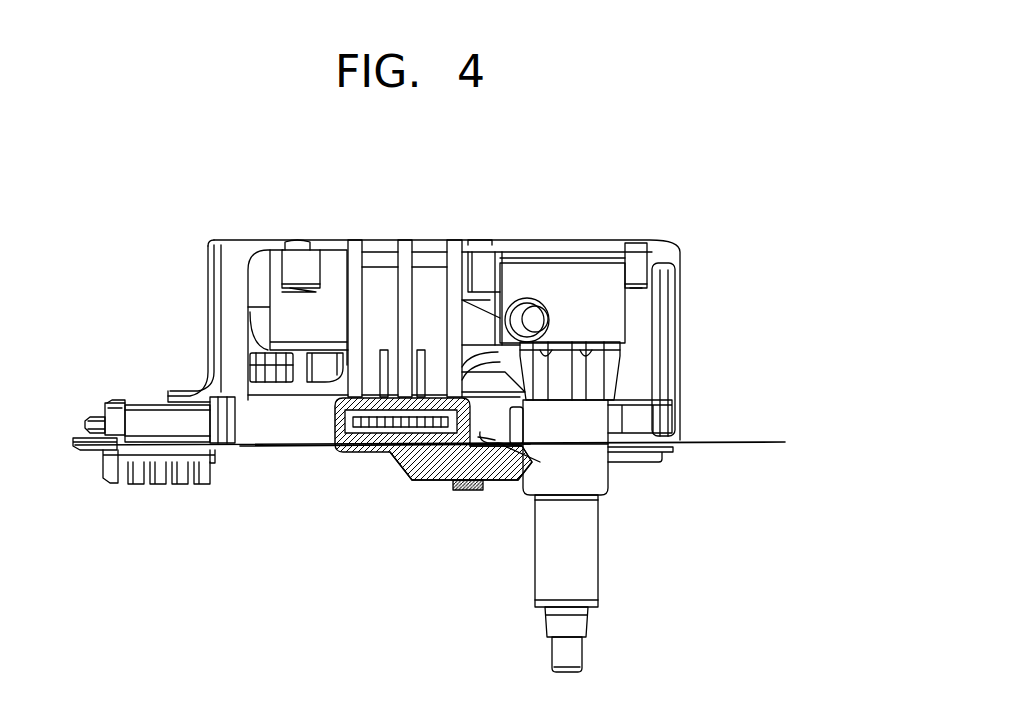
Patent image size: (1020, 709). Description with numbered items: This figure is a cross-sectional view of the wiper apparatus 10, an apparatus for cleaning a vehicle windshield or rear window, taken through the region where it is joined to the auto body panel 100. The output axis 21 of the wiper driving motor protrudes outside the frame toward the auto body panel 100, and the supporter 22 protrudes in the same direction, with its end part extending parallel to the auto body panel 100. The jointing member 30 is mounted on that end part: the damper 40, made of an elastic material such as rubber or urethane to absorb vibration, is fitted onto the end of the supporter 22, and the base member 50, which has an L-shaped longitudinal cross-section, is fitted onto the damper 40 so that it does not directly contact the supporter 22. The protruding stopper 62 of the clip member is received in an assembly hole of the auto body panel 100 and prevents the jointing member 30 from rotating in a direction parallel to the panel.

The wiper apparatus 10 is at (640, 193).
The auto body panel 100 is at (753, 438).
The output axis 21 is at (592, 558).
The supporter 22 is at (373, 423).
The jointing member 30 is at (339, 464).
The damper 40 is at (337, 425).
The base member 50 is at (415, 460).
The protruding stopper 62 is at (483, 462).